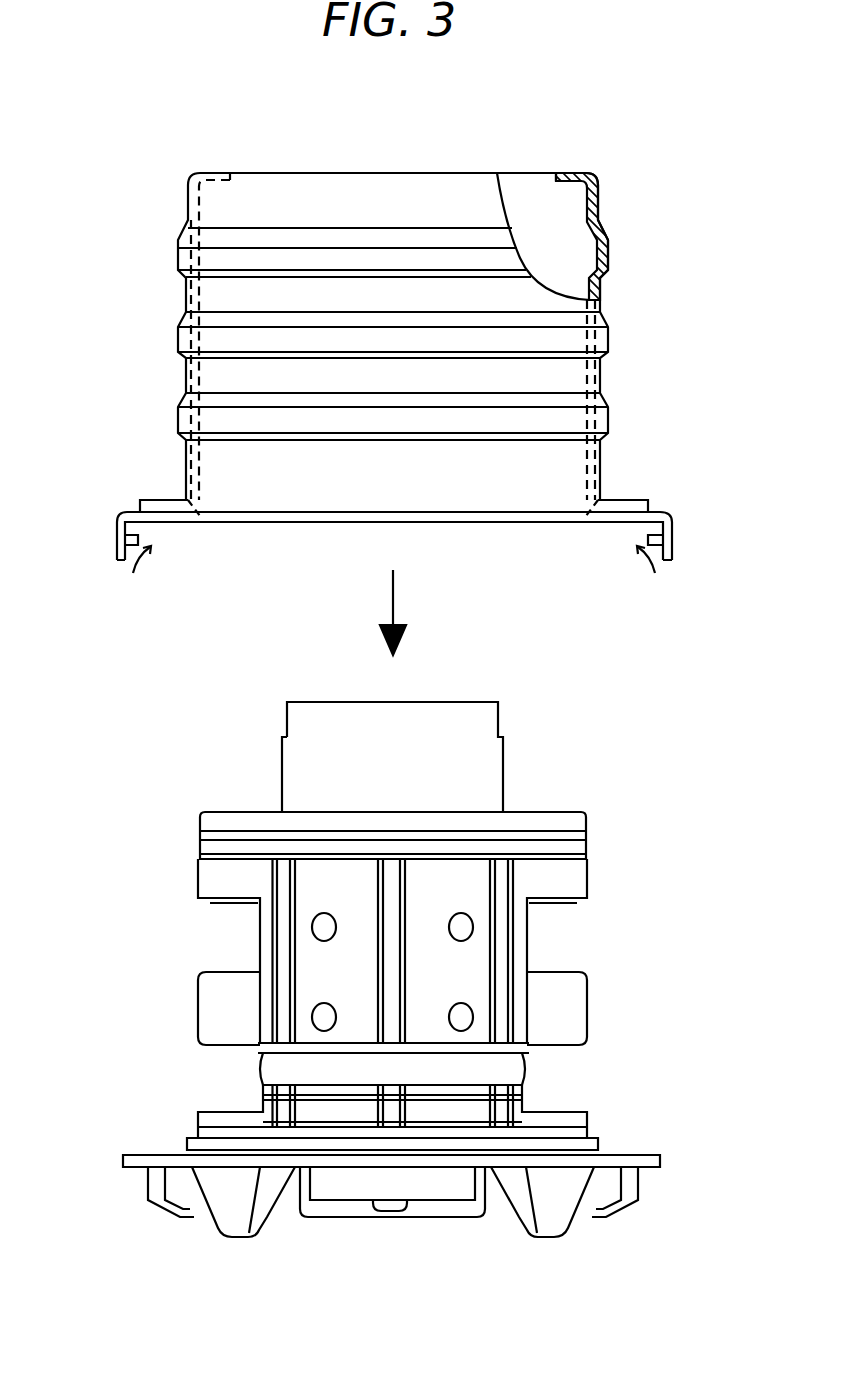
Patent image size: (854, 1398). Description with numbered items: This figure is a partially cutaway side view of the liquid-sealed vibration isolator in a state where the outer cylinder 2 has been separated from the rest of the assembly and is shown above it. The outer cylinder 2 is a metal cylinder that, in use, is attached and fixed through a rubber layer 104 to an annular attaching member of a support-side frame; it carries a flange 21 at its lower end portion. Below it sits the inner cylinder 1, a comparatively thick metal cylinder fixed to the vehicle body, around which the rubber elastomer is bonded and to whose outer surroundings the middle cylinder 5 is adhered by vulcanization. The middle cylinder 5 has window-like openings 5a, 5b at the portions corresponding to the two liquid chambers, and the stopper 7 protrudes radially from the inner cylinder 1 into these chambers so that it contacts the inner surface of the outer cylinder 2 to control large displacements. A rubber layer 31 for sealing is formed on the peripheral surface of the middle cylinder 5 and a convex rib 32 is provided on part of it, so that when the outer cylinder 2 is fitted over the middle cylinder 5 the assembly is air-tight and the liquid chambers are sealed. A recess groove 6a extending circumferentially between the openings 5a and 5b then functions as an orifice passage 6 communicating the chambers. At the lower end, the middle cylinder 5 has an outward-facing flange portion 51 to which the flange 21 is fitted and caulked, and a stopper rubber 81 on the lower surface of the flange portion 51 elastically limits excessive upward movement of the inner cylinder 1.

The inner cylinder 1 is at (487, 722).
The outer cylinder 2 is at (441, 329).
The rubber layer 104 is at (600, 232).
The flange 21 is at (672, 540).
The convex rib 32 is at (560, 832).
The middle cylinder 5 is at (398, 1094).
The window-like opening 5a is at (576, 905).
The window-like opening 5b is at (210, 904).
The stopper 7 is at (210, 994).
The orifice passage 6 is at (488, 1066).
The recess groove 6a is at (522, 1077).
The rubber layer 31 is at (210, 1117).
The flange portion 51 is at (135, 1170).
The stopper rubber 81 is at (228, 1210).